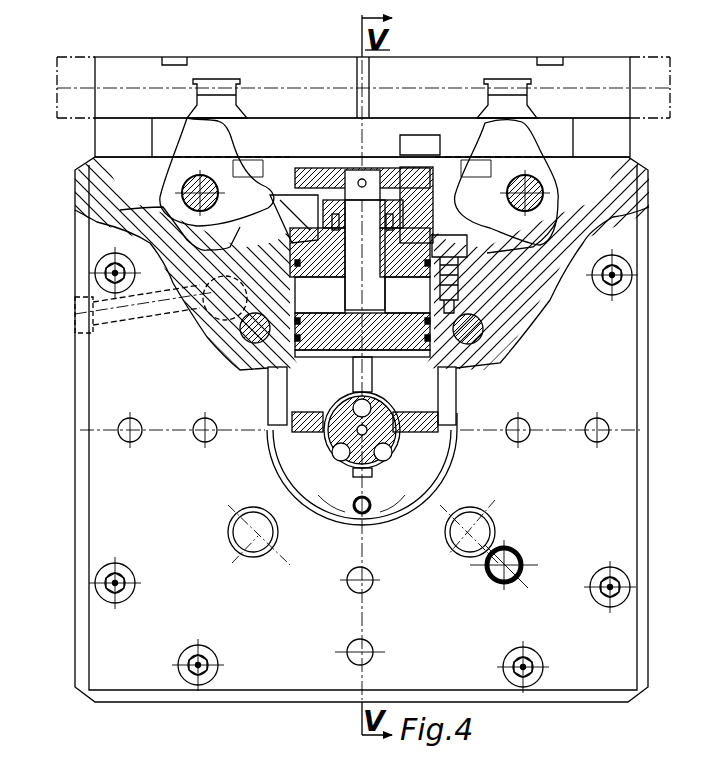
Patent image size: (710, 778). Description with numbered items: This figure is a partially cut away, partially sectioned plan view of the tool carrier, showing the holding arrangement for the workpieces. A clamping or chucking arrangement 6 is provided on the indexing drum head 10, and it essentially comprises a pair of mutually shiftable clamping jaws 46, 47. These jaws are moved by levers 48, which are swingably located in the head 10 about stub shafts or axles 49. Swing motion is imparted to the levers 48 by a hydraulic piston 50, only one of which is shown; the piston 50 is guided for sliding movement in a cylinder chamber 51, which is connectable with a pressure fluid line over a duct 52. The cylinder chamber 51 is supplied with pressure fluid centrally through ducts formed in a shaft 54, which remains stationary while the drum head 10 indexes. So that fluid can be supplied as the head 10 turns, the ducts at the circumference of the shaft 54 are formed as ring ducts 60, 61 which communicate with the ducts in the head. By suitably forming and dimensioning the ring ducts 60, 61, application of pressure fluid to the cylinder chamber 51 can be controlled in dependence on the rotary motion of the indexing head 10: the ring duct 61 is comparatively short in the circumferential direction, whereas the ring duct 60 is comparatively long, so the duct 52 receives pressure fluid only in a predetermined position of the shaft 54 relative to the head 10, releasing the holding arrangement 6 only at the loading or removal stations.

The clamping arrangement 6 is at (458, 50).
The indexing drum head 10 is at (630, 405).
The clamping jaw 46 is at (662, 102).
The clamping jaw 47 is at (141, 40).
The lever 48 is at (193, 145).
The stub shaft 49 is at (222, 232).
The hydraulic piston 50 is at (345, 298).
The cylinder chamber 51 is at (268, 368).
The duct 52 is at (374, 366).
The shaft 54 is at (348, 505).
The ring duct 60 is at (442, 422).
The ring duct 61 is at (300, 421).